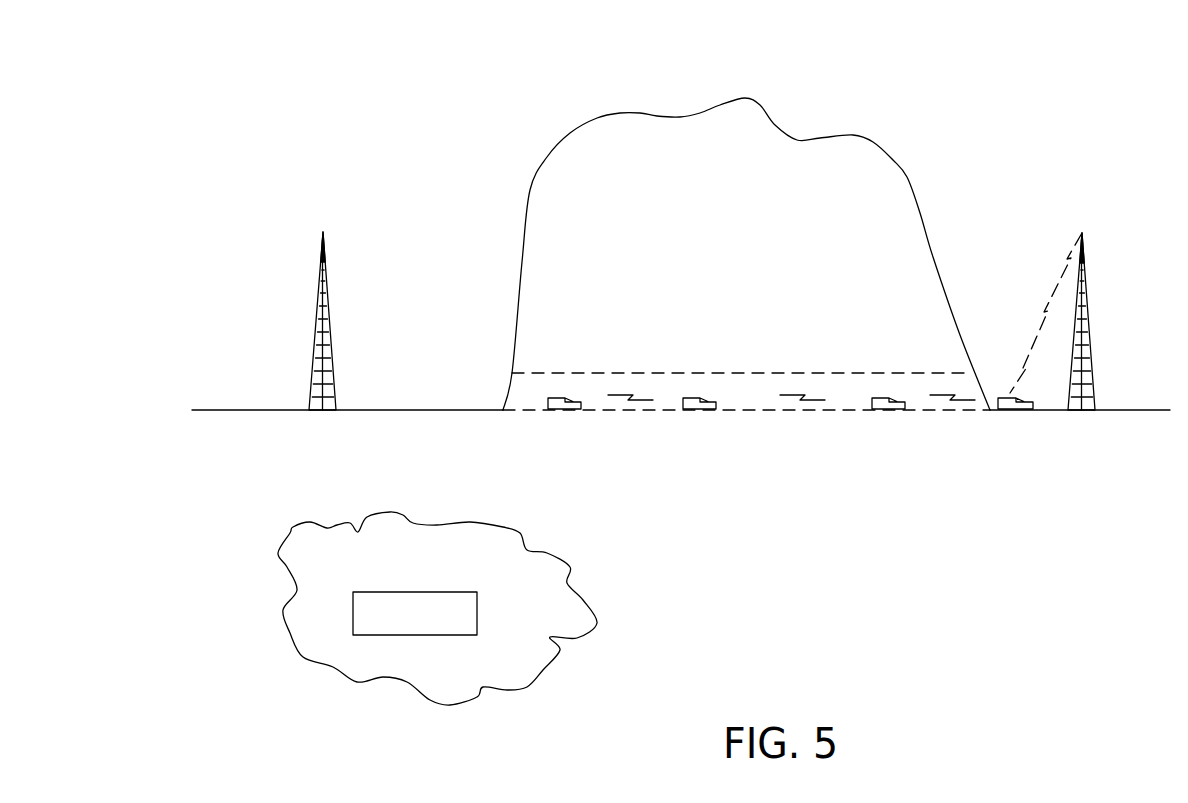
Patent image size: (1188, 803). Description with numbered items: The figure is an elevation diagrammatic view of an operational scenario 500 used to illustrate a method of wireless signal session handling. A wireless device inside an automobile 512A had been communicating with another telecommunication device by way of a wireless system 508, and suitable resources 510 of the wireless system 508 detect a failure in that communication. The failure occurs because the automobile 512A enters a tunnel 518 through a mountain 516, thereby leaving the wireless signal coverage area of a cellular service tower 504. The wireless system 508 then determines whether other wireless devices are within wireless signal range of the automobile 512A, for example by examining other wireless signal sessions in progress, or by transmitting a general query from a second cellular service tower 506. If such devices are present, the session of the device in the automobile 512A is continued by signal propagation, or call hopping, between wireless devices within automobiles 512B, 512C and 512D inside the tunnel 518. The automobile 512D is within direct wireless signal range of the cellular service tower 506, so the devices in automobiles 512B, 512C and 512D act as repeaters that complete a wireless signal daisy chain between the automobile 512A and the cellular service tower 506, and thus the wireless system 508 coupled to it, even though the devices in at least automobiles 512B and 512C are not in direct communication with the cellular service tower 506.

The operational scenario 500 is at (827, 62).
The cellular service tower 504 is at (318, 313).
The cellular service tower 506 is at (1092, 342).
The wireless system 508 is at (573, 563).
The resources 510 is at (417, 635).
The automobile 512A is at (562, 410).
The automobile 512B is at (695, 410).
The automobile 512C is at (884, 410).
The automobile 512D is at (1010, 410).
The mountain 516 is at (907, 177).
The tunnel 518 is at (765, 402).